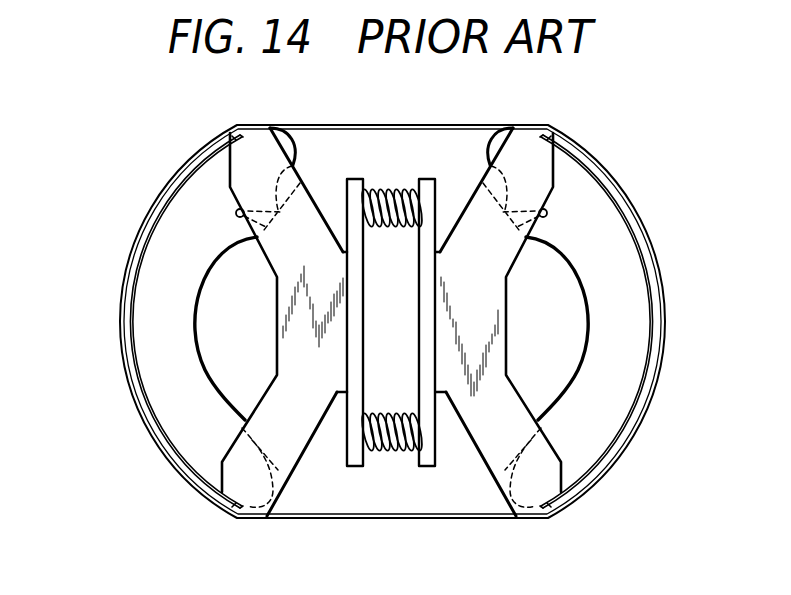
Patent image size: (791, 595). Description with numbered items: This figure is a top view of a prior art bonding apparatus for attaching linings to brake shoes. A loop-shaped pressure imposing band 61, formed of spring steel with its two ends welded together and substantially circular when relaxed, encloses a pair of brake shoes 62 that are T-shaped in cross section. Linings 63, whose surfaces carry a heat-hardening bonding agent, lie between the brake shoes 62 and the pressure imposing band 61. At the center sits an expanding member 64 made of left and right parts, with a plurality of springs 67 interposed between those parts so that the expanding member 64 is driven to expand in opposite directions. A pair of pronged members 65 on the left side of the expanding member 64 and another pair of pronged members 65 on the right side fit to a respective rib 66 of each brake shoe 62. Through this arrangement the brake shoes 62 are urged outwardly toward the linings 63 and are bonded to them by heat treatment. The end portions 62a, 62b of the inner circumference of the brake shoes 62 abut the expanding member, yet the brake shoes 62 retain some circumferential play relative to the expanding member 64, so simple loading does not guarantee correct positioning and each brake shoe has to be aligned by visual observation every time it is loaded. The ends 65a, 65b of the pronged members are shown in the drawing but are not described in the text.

The pressure imposing band 61 is at (622, 193).
The brake shoe 62 is at (128, 300).
The end portion of brake shoe inner circumference 62a is at (227, 513).
The end portion of brake shoe inner circumference 62b is at (228, 131).
The lining 63 is at (140, 400).
The expanding member 64 is at (430, 200).
The pronged member 65 is at (297, 178).
The spring lower hook 65a is at (257, 522).
The spring upper hook 65b is at (270, 128).
The rib 66 is at (158, 365).
The spring 67 is at (386, 190).